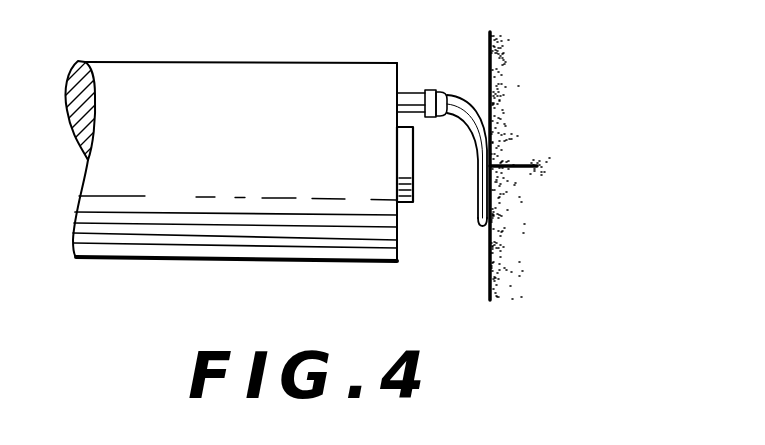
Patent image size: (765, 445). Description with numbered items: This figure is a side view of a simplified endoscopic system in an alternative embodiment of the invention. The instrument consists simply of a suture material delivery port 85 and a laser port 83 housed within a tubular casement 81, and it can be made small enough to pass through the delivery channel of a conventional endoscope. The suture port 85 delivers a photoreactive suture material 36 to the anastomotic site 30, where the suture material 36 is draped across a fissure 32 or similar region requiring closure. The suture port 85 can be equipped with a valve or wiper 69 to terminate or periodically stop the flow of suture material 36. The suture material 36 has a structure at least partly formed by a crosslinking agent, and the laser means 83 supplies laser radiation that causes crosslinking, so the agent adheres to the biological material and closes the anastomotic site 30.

The anastomotic site 30 is at (537, 117).
The fissure 32 is at (531, 164).
The photoreactive suture material 36 is at (474, 209).
The valve or wiper 69 is at (423, 118).
The tubular casement 81 is at (185, 167).
The laser port 83 is at (415, 176).
The suture material delivery port 85 is at (413, 92).